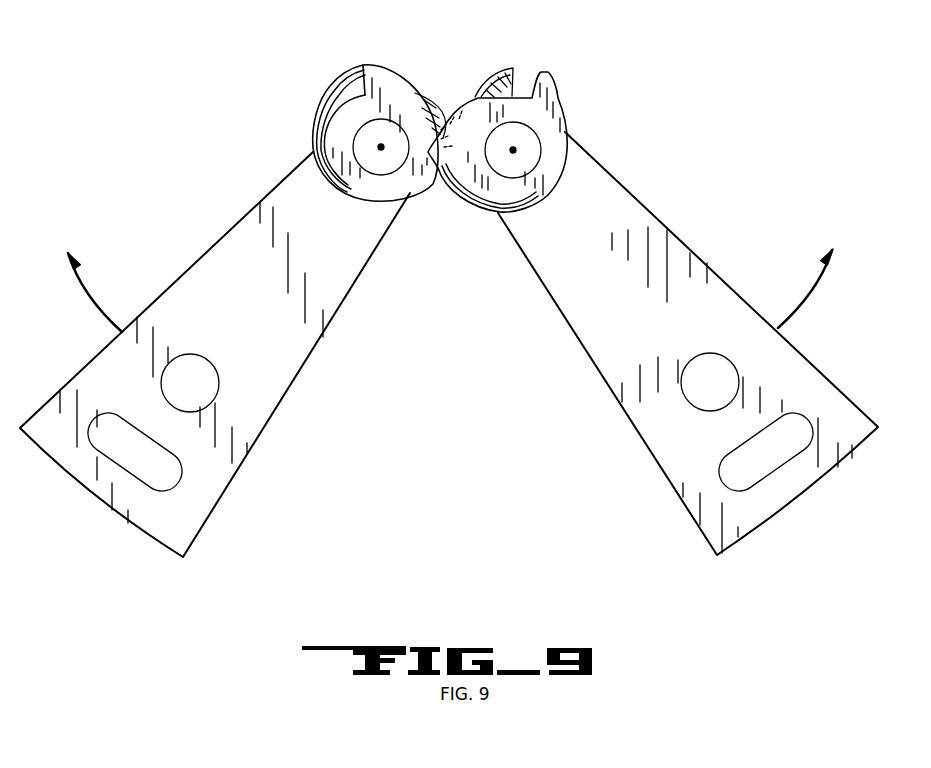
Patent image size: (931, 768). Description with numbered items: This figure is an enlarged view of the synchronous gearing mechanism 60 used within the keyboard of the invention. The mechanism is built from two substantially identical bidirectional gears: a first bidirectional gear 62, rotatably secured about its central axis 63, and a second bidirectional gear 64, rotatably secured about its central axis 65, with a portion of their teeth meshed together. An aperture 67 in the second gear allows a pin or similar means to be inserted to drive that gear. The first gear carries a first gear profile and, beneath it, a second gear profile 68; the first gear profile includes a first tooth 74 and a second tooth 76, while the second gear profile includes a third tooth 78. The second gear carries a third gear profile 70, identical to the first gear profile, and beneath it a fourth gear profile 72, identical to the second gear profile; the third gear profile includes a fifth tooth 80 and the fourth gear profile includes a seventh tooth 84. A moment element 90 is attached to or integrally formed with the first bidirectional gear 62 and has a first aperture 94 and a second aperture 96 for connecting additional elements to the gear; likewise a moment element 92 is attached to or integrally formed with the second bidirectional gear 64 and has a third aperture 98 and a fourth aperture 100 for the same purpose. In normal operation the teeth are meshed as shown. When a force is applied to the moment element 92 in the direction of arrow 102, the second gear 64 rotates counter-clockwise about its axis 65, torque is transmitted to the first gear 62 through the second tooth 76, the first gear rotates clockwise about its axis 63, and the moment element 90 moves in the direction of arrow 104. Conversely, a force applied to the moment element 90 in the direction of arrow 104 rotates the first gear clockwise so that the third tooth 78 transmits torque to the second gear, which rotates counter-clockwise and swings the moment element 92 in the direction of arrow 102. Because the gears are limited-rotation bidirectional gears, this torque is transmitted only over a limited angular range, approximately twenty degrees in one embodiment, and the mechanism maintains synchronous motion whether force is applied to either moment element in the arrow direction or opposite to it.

The gearing mechanism 60 is at (300, 103).
The first bidirectional gear 62 is at (379, 205).
The central axis 63 is at (381, 150).
The second bidirectional gear 64 is at (467, 208).
The central axis 65 is at (514, 150).
The aperture 67 is at (507, 172).
The second gear profile 68 is at (336, 92).
The third gear profile 70 is at (550, 143).
The fourth gear profile 72 is at (480, 206).
The first tooth 74 is at (382, 82).
The second tooth 76 is at (438, 188).
The third tooth 78 is at (440, 100).
The fifth tooth 80 is at (555, 77).
The seventh tooth 84 is at (497, 78).
The moment element 90 is at (280, 358).
The moment element 92 is at (610, 340).
The first aperture 94 is at (193, 382).
The second aperture 96 is at (157, 473).
The third aperture 98 is at (700, 392).
The fourth aperture 100 is at (778, 462).
The arrow 102 is at (807, 298).
The arrow 104 is at (92, 293).